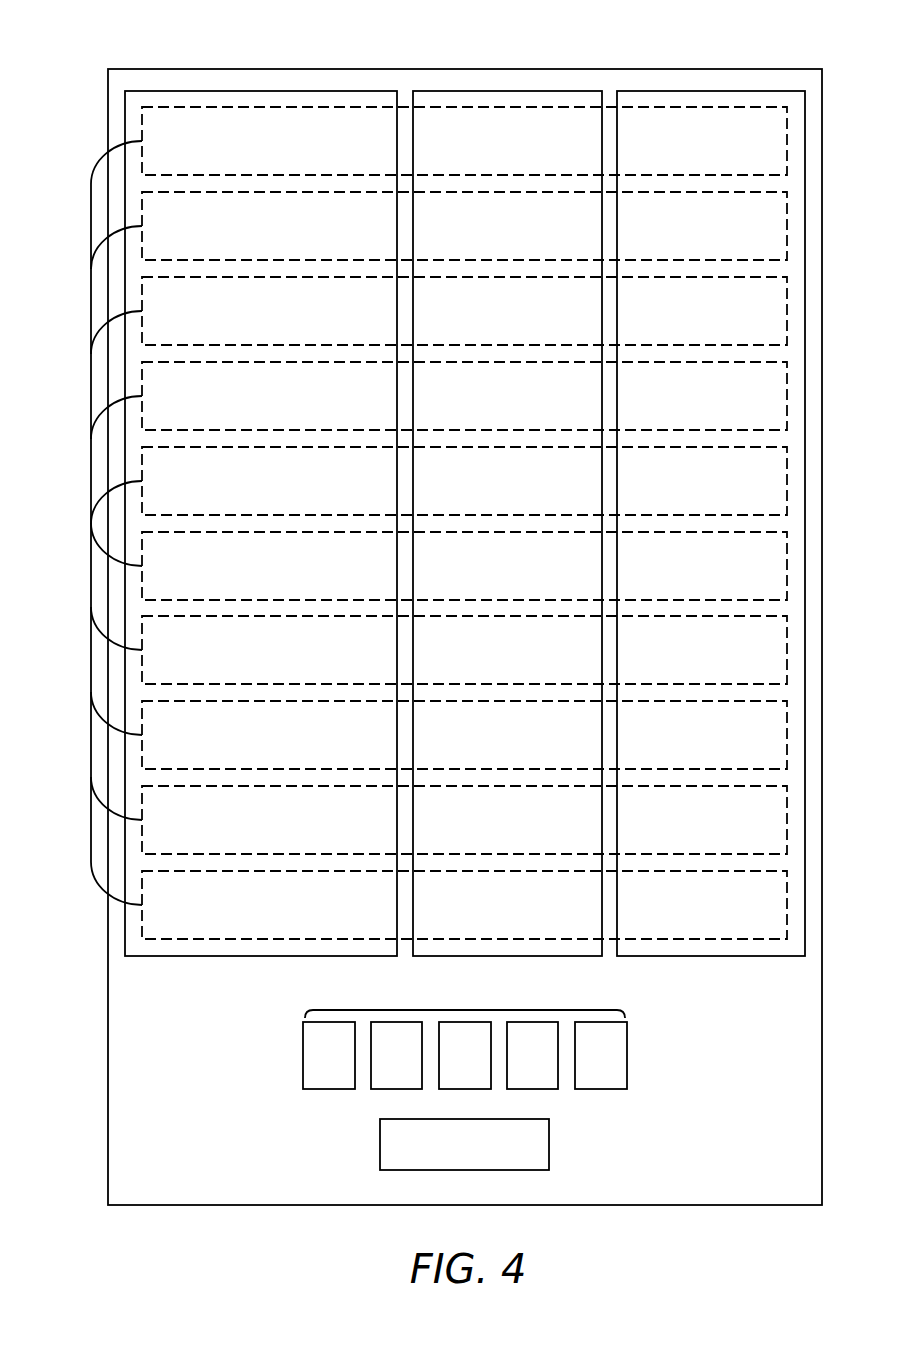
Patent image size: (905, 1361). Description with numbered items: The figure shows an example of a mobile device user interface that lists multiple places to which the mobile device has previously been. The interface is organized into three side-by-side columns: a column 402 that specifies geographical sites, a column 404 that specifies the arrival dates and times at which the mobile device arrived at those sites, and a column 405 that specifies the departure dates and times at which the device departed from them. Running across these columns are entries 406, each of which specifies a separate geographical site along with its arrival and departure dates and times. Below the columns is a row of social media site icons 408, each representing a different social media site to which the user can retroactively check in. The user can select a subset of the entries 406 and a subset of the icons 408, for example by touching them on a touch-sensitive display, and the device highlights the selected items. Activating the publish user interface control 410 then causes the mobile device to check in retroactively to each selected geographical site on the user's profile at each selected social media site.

The column 402 is at (257, 80).
The column 404 is at (509, 80).
The column 405 is at (713, 80).
The entries 406 is at (91, 523).
The social media site icons 408 is at (465, 1010).
The publish user interface control 410 is at (545, 1183).